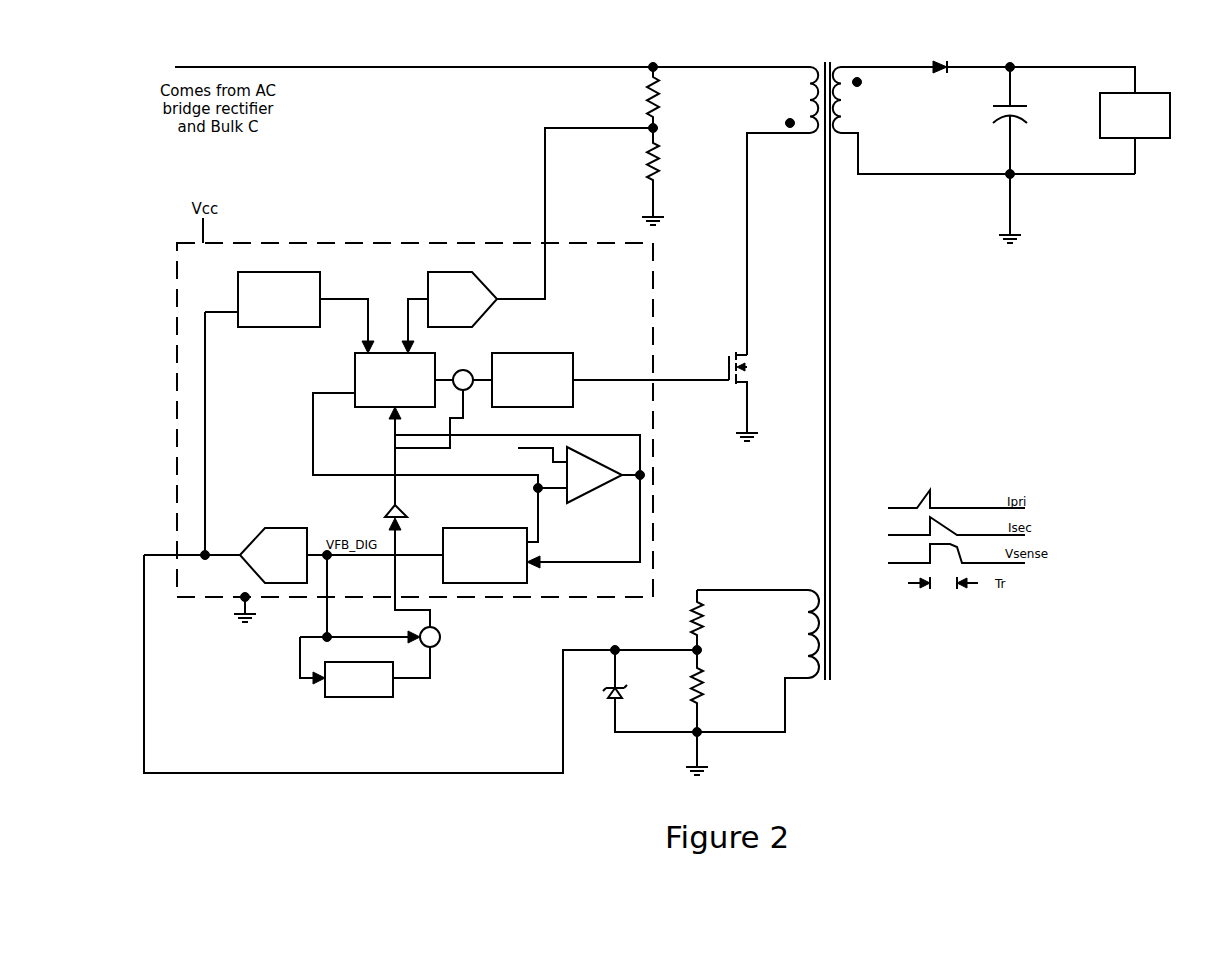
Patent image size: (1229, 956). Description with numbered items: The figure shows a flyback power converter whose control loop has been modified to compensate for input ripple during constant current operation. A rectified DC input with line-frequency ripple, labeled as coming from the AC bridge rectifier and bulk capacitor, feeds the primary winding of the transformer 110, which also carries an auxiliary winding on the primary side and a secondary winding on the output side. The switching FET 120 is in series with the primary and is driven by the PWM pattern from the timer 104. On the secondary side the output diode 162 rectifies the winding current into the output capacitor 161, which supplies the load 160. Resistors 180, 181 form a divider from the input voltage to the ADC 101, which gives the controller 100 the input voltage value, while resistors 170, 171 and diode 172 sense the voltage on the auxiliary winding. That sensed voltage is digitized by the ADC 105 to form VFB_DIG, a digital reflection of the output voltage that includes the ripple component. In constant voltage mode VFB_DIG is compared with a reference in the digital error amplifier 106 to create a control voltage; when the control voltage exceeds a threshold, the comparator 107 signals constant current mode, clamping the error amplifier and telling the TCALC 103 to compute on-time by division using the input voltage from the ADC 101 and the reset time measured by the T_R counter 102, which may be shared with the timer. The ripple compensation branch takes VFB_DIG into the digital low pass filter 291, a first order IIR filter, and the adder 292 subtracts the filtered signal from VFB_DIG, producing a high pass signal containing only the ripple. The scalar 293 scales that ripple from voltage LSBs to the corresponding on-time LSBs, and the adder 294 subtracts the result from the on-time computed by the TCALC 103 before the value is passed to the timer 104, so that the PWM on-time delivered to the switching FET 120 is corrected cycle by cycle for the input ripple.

The controller 100 is at (232, 241).
The ADC 101 is at (445, 272).
The T_R counter 102 is at (302, 272).
The TCALC 103 is at (367, 408).
The timer 104 is at (527, 352).
The ADC 105 is at (280, 527).
The digital error amplifier 106 is at (460, 527).
The comparator 107 is at (580, 447).
The transformer 110 is at (825, 57).
The switching FET 120 is at (750, 358).
The load 160 is at (1157, 87).
The output capacitor 161 is at (1025, 100).
The output diode 162 is at (935, 53).
The resistor 170 is at (712, 620).
The resistor 171 is at (712, 690).
The diode 172 is at (622, 688).
The resistor 180 is at (662, 102).
The resistor 181 is at (662, 162).
The digital low pass filter 291 is at (343, 660).
The adder 292 is at (447, 632).
The scalar 293 is at (403, 508).
The adder 294 is at (465, 362).